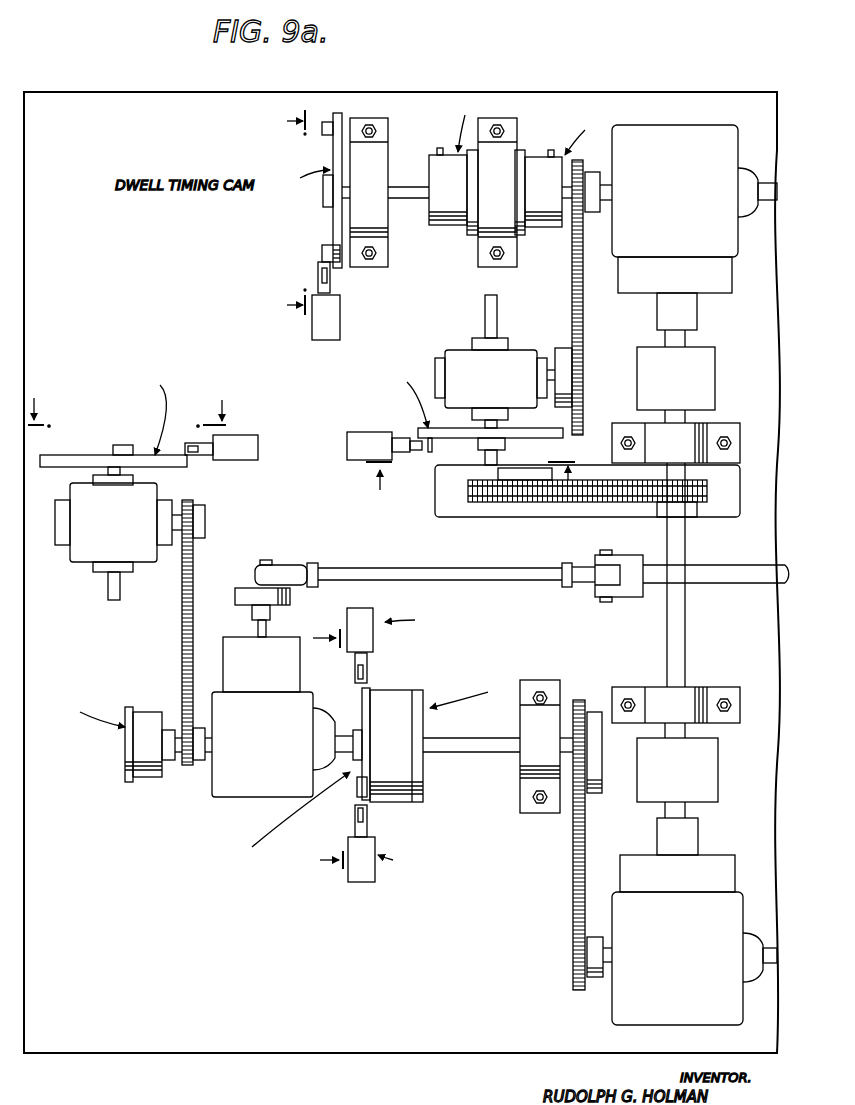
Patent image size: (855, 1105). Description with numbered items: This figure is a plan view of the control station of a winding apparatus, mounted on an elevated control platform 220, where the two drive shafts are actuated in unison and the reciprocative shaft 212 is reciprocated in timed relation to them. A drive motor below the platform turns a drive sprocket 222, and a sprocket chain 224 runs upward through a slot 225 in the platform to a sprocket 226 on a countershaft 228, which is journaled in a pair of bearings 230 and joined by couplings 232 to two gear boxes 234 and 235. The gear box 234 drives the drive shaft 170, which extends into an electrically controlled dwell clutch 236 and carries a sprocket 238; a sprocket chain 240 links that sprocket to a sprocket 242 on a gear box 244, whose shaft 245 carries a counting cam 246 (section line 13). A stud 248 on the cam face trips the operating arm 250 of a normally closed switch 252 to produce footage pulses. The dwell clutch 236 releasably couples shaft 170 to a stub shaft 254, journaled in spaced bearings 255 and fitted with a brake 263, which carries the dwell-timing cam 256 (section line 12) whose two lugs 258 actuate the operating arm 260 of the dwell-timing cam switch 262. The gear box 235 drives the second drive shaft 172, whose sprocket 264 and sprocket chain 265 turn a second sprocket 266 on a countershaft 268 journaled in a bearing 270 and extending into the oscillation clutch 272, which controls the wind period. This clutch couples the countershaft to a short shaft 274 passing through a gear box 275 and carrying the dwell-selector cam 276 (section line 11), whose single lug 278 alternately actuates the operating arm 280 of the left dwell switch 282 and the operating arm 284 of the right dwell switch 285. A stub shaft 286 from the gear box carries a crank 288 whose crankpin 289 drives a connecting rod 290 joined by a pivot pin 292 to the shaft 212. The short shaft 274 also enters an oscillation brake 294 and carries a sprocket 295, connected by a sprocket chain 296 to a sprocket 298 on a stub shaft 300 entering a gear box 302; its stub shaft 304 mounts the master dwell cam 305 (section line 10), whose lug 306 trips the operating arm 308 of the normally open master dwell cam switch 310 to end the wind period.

The section line 10- 10 is at (131, 403).
The section line 11- 11 is at (327, 743).
The section line 12- 12 is at (279, 213).
The section line 13- 13 is at (474, 471).
The drive shaft 170 is at (775, 185).
The second drive shaft 172 is at (775, 962).
The reciprocative shaft 212 is at (760, 583).
The control platform 220 is at (218, 1045).
The drive sprocket 222 is at (500, 468).
The sprocket chain 224 is at (563, 502).
The slot 225 is at (480, 508).
The sprocket 226 is at (705, 488).
The countershaft 228 is at (686, 544).
The bearings 230 is at (700, 437).
The couplings 232 is at (705, 374).
The gear box 234 is at (685, 227).
The gear box 235 is at (687, 921).
The dwell clutch 236 is at (549, 205).
The sprocket 238 is at (648, 152).
The sprocket chain 240 is at (584, 340).
The sprocket 242 is at (565, 350).
The gear box 244 is at (491, 383).
The shaft 245 is at (485, 333).
The counting cam 246 is at (515, 432).
The stud 248 is at (430, 453).
The operating arm 250 is at (402, 438).
The switch 252 is at (358, 446).
The stub shaft 254 is at (407, 187).
The bearings 255 is at (385, 212).
The dwell-timing cam 256 is at (333, 219).
The lugs 258 is at (325, 138).
The operating arm 260 is at (330, 282).
The dwell-timing cam switch 262 is at (320, 328).
The brake 263 is at (458, 208).
The sprocket 264 is at (594, 978).
The sprocket chain 265 is at (573, 895).
The second sprocket 266 is at (592, 712).
The countershaft 268 is at (500, 752).
The bearing 270 is at (540, 738).
The oscillation clutch 272 is at (418, 778).
The short shaft 274 is at (345, 740).
The gear box 275 is at (241, 757).
The dwell-selector cam 276 is at (364, 700).
The lug 278 is at (357, 795).
The operating arm 280 is at (367, 670).
The left dwell switch 282 is at (368, 618).
The operating arm 284 is at (367, 818).
The right dwell switch 285 is at (367, 880).
The stub shaft 286 is at (258, 636).
The crank 288 is at (248, 588).
The crankpin 289 is at (268, 562).
The connecting rod 290 is at (365, 568).
The pivot pin 292 is at (625, 542).
The oscillation brake 294 is at (145, 751).
The sprocket 295 is at (198, 760).
The sprocket chain 296 is at (182, 640).
The sprocket 298 is at (205, 522).
The stub shaft 300 is at (180, 540).
The gear box 302 is at (113, 519).
The stub shaft 304 is at (108, 585).
The master dwell cam 305 is at (85, 445).
The lug 306 is at (120, 445).
The operating arm 308 is at (200, 455).
The master dwell cam switch 310 is at (258, 442).